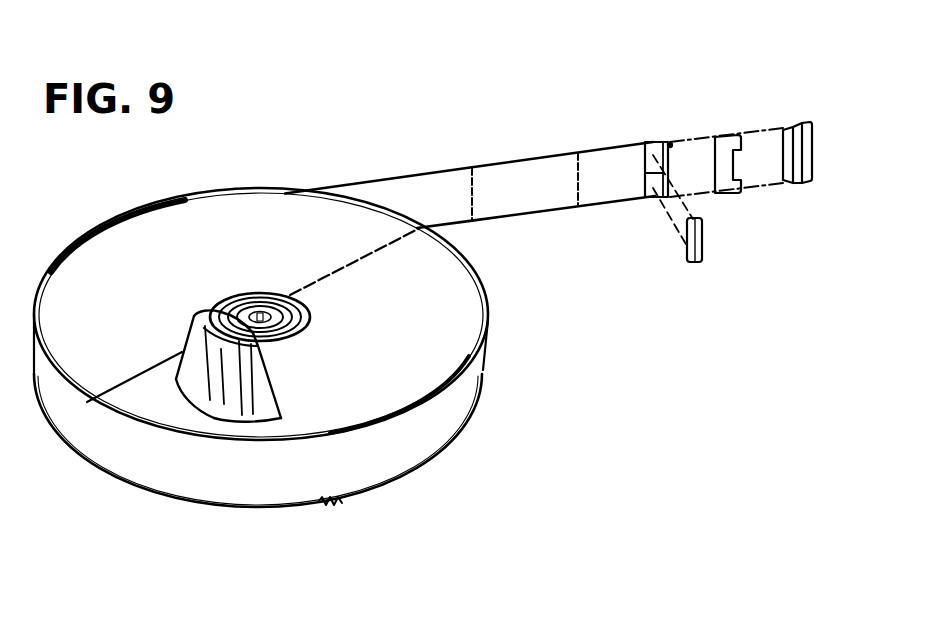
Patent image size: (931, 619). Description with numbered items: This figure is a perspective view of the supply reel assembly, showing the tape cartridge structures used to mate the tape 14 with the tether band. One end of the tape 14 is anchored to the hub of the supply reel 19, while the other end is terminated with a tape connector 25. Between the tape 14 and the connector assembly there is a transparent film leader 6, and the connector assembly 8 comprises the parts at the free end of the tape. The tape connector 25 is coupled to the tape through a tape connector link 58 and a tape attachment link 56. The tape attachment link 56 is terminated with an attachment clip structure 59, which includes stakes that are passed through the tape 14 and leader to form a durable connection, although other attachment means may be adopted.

The supply reel 19 is at (248, 188).
The tape 14 is at (424, 174).
The transparent film leader 6 is at (545, 158).
The end hook assembly 8 is at (832, 75).
The tape attachment link 56 is at (657, 143).
The tape connector link 58 is at (725, 133).
The tape connector 25 is at (800, 122).
The attachment clip structure 59 is at (702, 250).